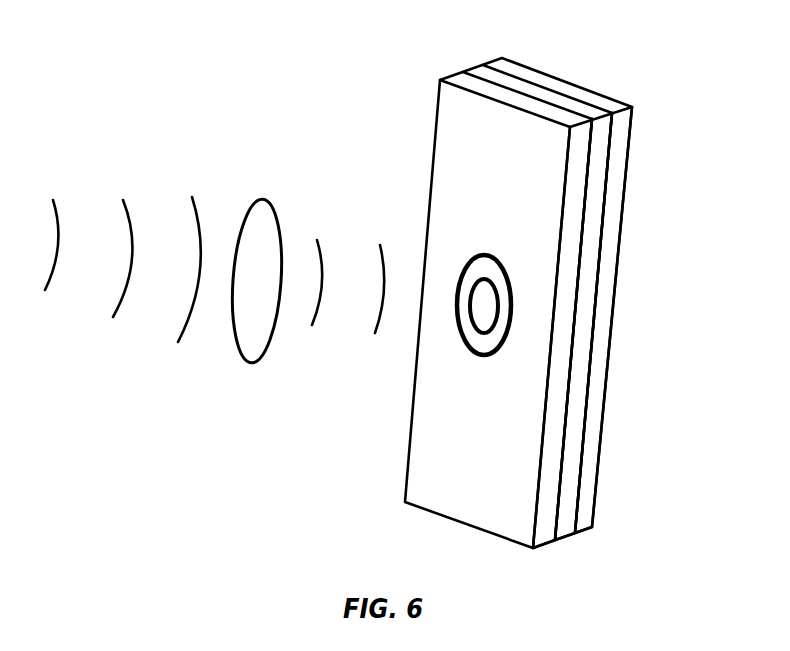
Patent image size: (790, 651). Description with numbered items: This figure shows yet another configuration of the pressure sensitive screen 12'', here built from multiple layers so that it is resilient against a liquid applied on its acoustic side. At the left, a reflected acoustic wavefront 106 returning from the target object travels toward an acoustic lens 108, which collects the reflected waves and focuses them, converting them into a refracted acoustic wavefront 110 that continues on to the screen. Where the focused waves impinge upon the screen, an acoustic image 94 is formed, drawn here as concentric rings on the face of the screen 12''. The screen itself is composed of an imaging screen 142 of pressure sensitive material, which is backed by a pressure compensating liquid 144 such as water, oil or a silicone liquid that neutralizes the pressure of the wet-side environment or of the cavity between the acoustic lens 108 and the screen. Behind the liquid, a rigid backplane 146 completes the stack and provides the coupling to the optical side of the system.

The screen 12'' is at (531, 293).
The acoustic image 94 is at (443, 340).
The reflected acoustic wavefront 106 is at (116, 333).
The acoustic lens 108 is at (252, 363).
The refracted acoustic wavefront 110 is at (363, 235).
The imaging screen 142 is at (543, 533).
The pressure compensating liquid 144 is at (563, 527).
The rigid backplane 146 is at (587, 522).